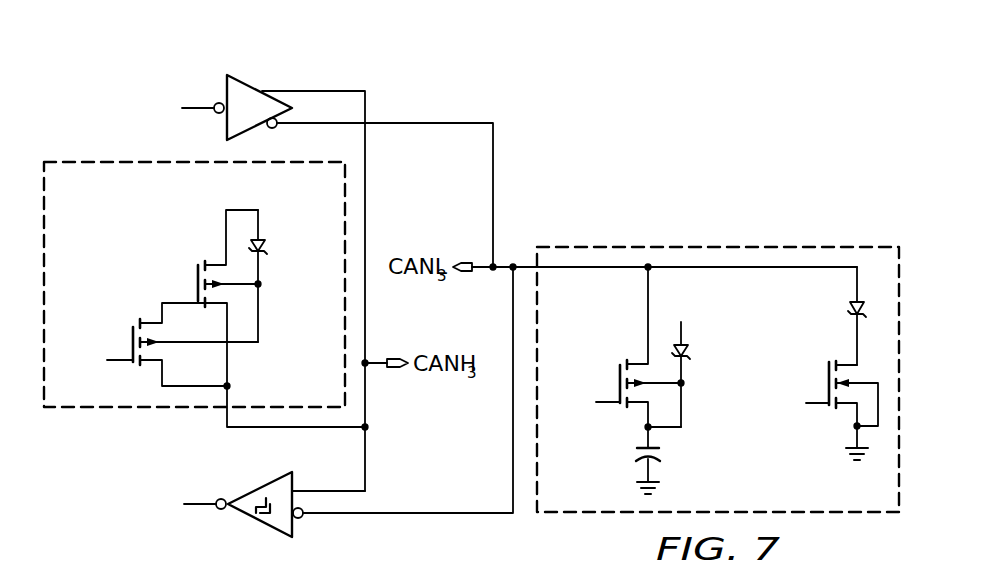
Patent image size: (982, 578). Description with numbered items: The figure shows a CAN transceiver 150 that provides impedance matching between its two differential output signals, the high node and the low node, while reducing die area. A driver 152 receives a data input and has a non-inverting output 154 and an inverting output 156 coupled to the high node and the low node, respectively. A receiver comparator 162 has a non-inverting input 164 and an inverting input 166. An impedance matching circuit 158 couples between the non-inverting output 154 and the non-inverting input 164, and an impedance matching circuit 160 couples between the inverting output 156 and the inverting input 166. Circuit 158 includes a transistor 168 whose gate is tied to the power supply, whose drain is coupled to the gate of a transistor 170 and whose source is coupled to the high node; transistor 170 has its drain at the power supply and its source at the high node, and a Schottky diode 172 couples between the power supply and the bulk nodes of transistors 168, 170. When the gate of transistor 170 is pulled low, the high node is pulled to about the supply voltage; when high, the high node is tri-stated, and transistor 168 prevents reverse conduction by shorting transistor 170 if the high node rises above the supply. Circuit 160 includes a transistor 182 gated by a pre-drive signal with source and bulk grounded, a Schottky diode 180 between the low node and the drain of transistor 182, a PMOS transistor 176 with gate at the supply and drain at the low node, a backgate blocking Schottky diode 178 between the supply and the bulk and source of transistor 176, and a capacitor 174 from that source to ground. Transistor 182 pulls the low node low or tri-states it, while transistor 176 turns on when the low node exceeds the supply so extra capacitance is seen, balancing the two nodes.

The CAN transceiver 150 is at (642, 98).
The driver 152 is at (245, 83).
The non-inverting output 154 is at (328, 90).
The inverting output 156 is at (396, 121).
The impedance matching circuit 158 is at (92, 161).
The impedance matching circuit 160 is at (720, 246).
The receiver comparator 162 is at (256, 523).
The non-inverting input 164 is at (338, 490).
The inverting input 166 is at (330, 515).
The transistor 168 is at (130, 334).
The transistor 170 is at (195, 273).
The Schottky diode 172 is at (268, 254).
The capacitor 174 is at (636, 455).
The PMOS transistor 176 is at (617, 373).
The Schottky diode 178 is at (691, 358).
The Schottky diode 180 is at (848, 313).
The transistor 182 is at (826, 370).